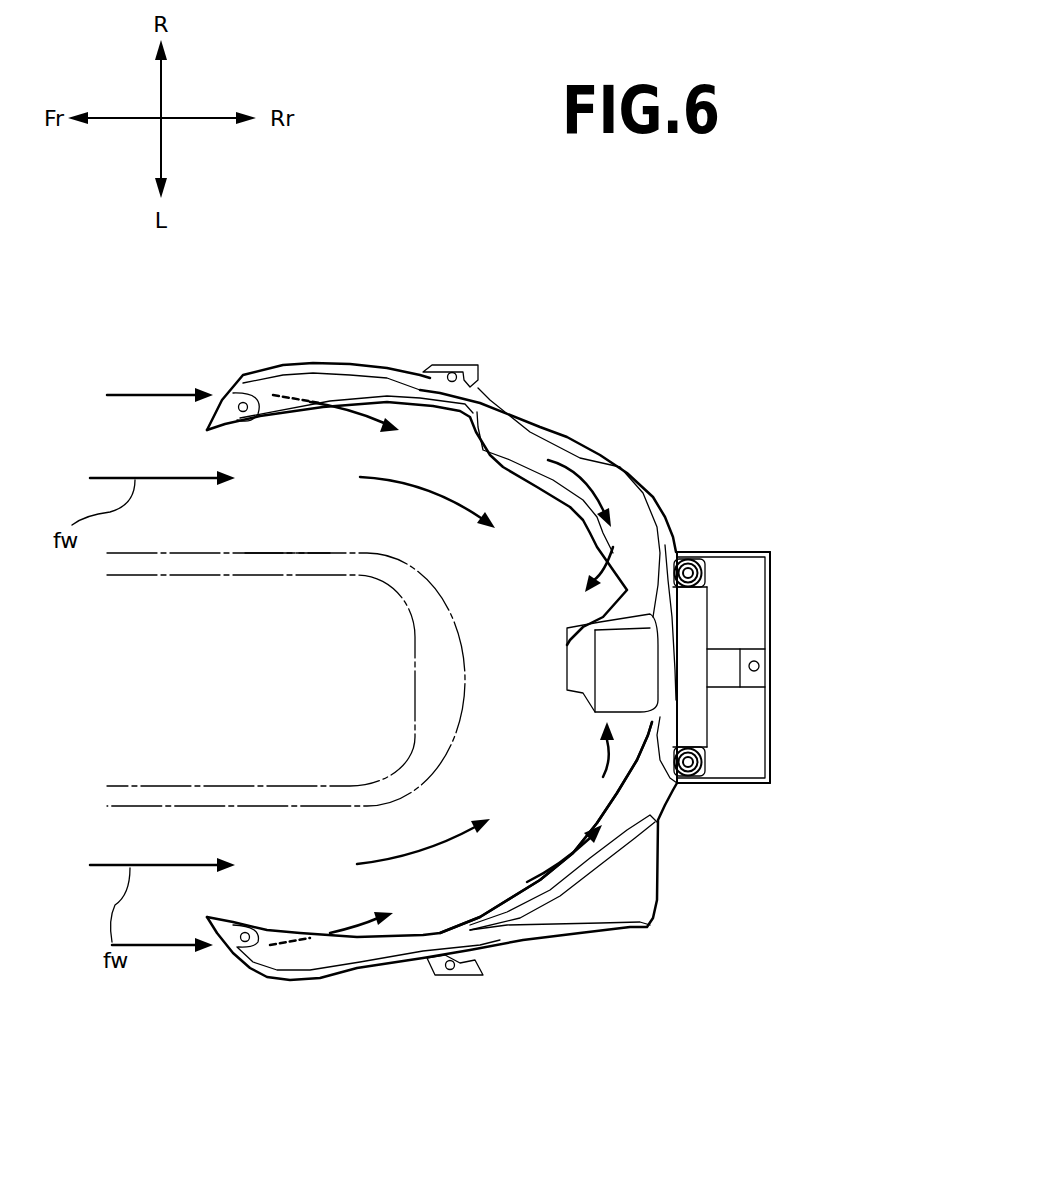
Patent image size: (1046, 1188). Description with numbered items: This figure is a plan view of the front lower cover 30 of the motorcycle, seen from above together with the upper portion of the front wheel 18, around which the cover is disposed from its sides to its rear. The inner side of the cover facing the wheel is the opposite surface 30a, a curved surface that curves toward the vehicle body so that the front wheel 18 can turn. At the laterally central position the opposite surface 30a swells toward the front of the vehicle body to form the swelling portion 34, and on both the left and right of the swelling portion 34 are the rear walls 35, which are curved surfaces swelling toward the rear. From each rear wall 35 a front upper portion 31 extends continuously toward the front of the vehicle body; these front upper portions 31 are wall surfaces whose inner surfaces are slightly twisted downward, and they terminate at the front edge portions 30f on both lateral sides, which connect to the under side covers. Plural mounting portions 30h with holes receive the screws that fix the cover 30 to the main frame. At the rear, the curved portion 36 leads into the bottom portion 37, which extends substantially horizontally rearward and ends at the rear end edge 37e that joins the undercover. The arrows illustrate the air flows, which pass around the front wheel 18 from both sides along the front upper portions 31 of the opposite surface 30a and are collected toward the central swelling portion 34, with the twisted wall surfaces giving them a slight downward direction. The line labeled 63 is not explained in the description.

The front wheel 18 is at (162, 578).
The front lower cover 30 is at (592, 398).
The opposite surface 30a is at (627, 813).
The front edge portion 30f is at (240, 372).
The mounting portion 30h is at (463, 392).
The front upper portion 31 is at (320, 364).
The swelling portion 34 is at (567, 665).
The rear wall 35 is at (650, 497).
The curved portion 36 is at (677, 627).
The bottom portion 37 is at (763, 667).
The rear end edge 37e is at (770, 618).
The tank cover line 63 is at (243, 552).